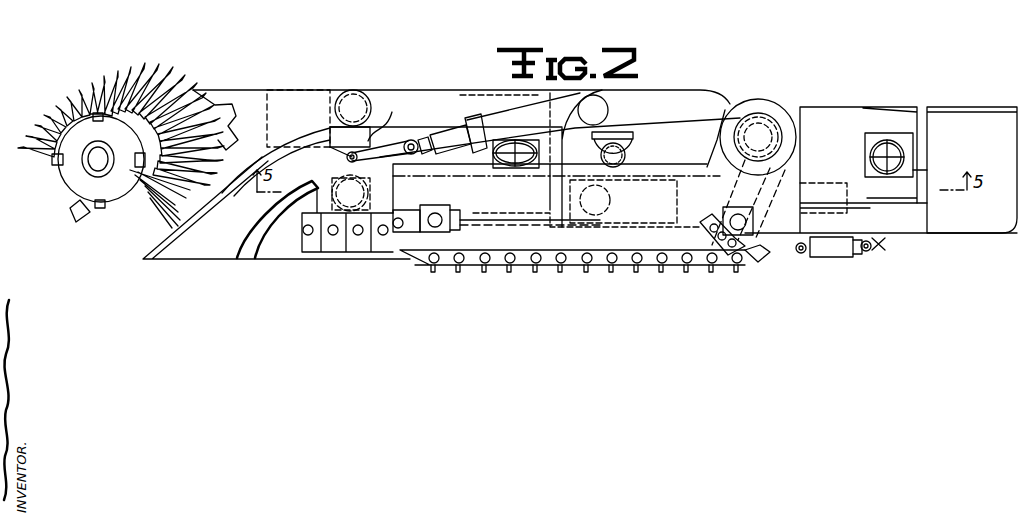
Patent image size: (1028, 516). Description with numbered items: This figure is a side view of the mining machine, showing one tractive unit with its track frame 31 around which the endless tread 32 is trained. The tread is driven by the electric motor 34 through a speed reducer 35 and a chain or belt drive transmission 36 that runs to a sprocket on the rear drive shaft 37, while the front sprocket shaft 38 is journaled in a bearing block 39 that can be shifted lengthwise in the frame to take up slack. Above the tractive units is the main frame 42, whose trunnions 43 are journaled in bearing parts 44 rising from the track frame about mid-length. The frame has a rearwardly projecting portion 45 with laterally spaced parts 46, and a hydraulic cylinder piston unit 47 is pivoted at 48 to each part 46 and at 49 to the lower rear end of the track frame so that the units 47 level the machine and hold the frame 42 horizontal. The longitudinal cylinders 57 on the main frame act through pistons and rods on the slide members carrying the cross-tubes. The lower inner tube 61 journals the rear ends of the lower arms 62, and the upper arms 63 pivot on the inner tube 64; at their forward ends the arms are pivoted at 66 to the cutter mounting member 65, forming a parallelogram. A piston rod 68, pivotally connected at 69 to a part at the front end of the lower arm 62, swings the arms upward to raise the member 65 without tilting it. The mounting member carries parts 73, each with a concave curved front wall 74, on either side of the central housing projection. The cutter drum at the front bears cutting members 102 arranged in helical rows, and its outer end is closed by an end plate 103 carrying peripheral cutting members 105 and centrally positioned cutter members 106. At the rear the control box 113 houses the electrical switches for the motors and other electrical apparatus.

The cutting members 102 is at (78, 92).
The end plate 103 is at (73, 175).
The cutting members 105 is at (55, 160).
The cutter members 106 is at (97, 175).
The parts 73 is at (245, 92).
The concave curved front wall 74 is at (233, 120).
The pivot 66 is at (353, 96).
The cutter mounting member 65 is at (383, 117).
The pivotal connection 69 is at (345, 157).
The piston rod 68 is at (387, 148).
The rigid forwardly projecting arms 63 is at (420, 95).
The main frame 42 is at (676, 100).
The inner tube 64 is at (610, 110).
The trunnions 43 is at (622, 152).
The bearing or journal parts 44 is at (634, 162).
The inner tube 61 is at (606, 200).
The speed reducer 35 is at (760, 101).
The drive transmission means 36 is at (718, 250).
The frame 31 is at (655, 246).
The endless tracks or treads 32 is at (752, 260).
The rigid forwardly projecting arms 62 is at (385, 214).
The bearing block 39 is at (426, 209).
The front sprocket shaft 38 is at (437, 217).
The electric motor 34 is at (835, 115).
The rear or drive shaft 37 is at (754, 222).
The cylinder 57 is at (828, 192).
The control box 113 is at (985, 230).
The hydraulic cylinder piston unit 47 is at (840, 254).
The pivotal connection 49 is at (803, 253).
The pivotal connection 48 is at (866, 251).
The laterally spaced parts 46 is at (878, 243).
The rearwardly projecting portion 45 is at (912, 225).